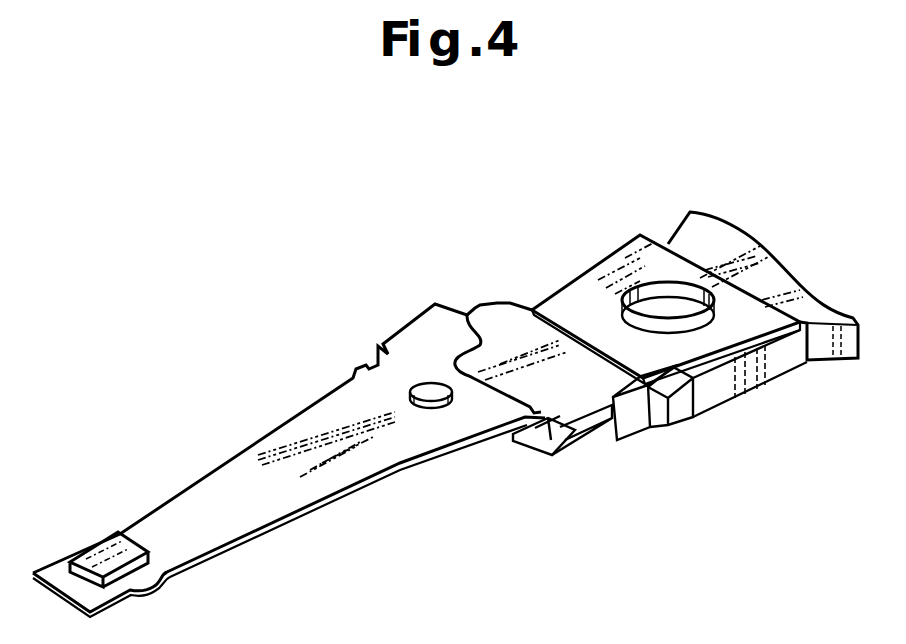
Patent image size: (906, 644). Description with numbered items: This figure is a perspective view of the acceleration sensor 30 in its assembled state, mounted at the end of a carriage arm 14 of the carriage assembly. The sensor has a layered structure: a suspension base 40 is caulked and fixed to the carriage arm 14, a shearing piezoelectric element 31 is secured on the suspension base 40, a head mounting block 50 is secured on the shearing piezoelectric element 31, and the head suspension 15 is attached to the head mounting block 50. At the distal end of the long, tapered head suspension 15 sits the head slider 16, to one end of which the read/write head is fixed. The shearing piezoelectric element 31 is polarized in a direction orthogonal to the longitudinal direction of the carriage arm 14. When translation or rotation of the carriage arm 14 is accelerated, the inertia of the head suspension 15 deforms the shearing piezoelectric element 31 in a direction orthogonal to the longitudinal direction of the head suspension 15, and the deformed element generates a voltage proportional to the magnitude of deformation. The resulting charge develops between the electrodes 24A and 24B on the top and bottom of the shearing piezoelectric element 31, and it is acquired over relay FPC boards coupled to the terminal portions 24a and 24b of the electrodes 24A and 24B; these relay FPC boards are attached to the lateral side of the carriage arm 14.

The carriage arm 14 is at (732, 238).
The head suspension 15 is at (252, 507).
The head slider 16 is at (108, 542).
The electrode 24A is at (530, 435).
The electrode 24B is at (662, 444).
The terminal portion 24a is at (660, 410).
The terminal portion 24b is at (642, 438).
The acceleration sensor 30 is at (642, 513).
The shearing piezoelectric element 31 is at (573, 437).
The suspension base 40 is at (647, 237).
The head mounting block 50 is at (516, 320).